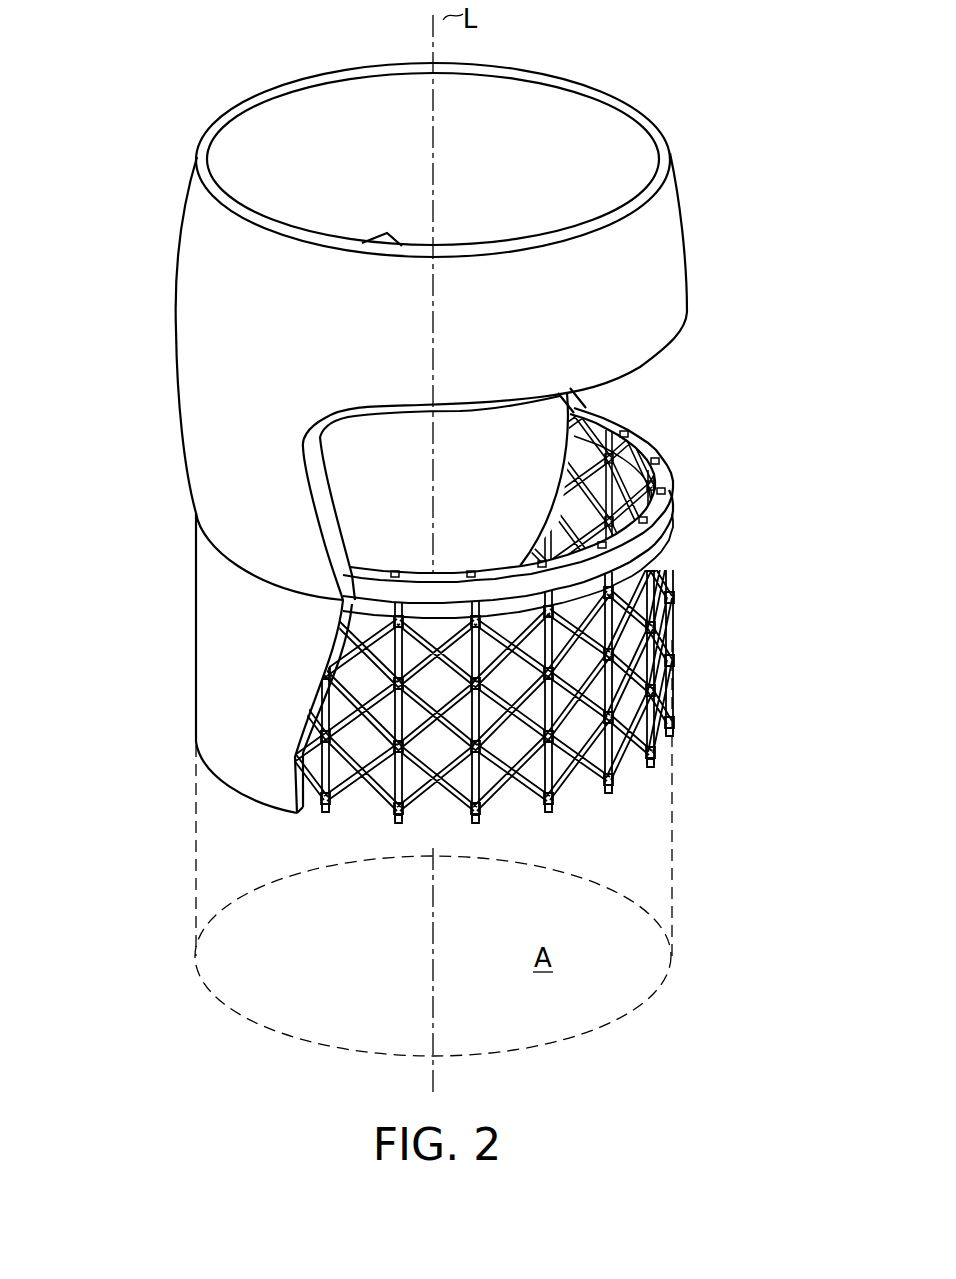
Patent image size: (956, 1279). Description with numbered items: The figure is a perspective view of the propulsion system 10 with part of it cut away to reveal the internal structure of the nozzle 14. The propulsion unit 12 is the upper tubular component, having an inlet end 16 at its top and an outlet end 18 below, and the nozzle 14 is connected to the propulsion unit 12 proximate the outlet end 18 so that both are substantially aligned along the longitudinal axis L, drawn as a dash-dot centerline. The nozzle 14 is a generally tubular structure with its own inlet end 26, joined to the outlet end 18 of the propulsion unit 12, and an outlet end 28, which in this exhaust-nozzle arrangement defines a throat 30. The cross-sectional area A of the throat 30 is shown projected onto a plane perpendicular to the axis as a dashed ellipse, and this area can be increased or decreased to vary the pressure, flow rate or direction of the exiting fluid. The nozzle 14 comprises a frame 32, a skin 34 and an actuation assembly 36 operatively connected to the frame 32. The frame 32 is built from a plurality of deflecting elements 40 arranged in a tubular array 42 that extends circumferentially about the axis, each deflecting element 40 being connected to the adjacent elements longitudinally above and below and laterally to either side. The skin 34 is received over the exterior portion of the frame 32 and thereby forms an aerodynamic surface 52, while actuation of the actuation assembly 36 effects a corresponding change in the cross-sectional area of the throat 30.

The propulsion system 10 is at (716, 108).
The propulsion unit 12 is at (680, 245).
The nozzle 14 is at (192, 610).
The inlet end 16 is at (180, 149).
The outlet end 18 is at (181, 520).
The inlet end 26 is at (693, 467).
The outlet end 28 is at (697, 736).
The throat 30 is at (410, 851).
The frame 32 is at (680, 611).
The skin 34 is at (212, 664).
The actuation assembly 36 is at (670, 413).
The deflecting elements 40 is at (632, 766).
The array 42 is at (697, 641).
The aerodynamic surface 52 is at (238, 723).